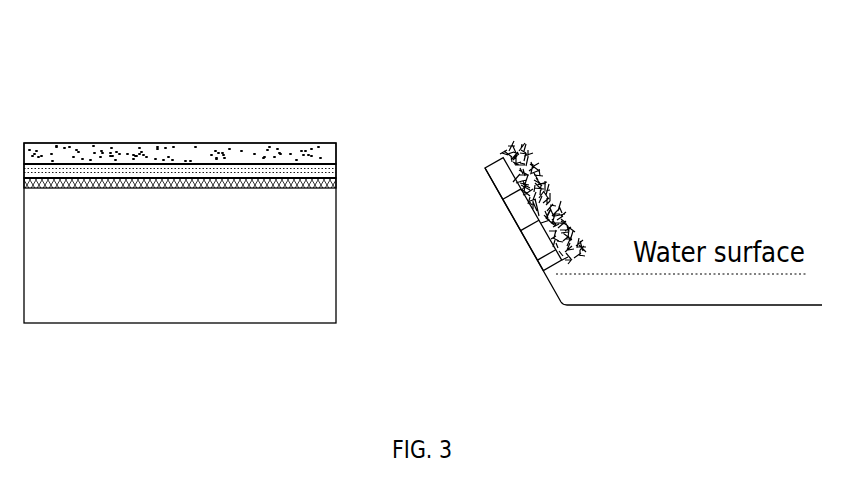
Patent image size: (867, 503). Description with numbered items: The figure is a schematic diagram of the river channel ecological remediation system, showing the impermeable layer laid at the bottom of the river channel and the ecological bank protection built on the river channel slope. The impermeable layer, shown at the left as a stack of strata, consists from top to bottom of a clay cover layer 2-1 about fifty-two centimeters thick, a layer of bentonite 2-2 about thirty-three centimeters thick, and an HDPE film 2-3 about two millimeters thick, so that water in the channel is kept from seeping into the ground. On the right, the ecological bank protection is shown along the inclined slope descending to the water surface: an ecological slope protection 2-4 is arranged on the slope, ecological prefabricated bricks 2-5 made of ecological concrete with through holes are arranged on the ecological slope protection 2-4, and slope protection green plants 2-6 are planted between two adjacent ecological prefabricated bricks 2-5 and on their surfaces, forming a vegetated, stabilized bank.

The clay cover layer 2-1 is at (310, 162).
The bentonite 2-2 is at (337, 172).
The HDPE film 2-3 is at (160, 187).
The ecological slope protection 2-4 is at (317, 265).
The ecological prefabricated brick 2-5 is at (486, 166).
The slope protection green plants 2-6 is at (559, 210).